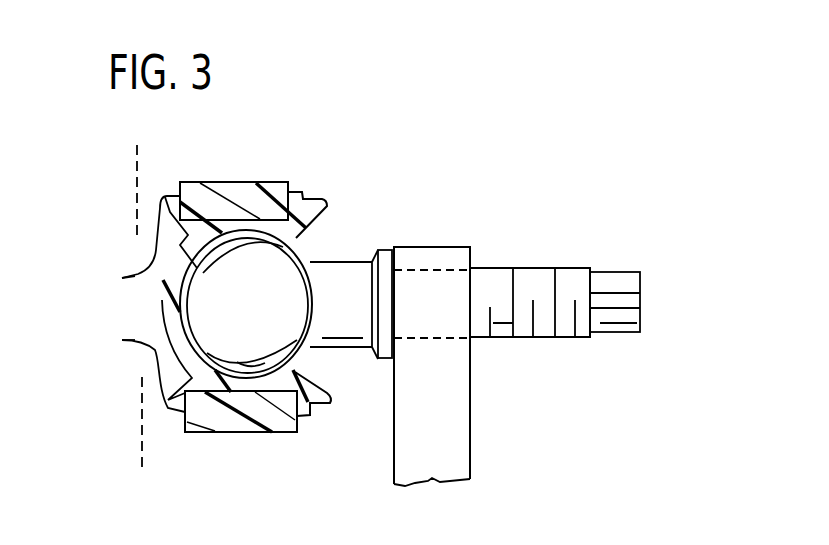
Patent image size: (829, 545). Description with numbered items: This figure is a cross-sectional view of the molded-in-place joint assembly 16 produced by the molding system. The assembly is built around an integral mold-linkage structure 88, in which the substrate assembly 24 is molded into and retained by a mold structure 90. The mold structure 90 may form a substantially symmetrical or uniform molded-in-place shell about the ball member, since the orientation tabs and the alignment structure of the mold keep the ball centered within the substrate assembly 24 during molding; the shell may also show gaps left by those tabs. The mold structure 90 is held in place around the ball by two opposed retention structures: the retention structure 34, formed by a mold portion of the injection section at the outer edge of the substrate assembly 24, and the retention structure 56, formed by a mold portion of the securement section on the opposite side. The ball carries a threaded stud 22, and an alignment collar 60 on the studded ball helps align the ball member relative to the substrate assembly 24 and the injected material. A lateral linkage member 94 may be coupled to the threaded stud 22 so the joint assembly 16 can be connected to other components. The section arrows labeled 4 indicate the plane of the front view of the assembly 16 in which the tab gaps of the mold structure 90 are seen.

The molded-in-place joint assembly 16 is at (602, 222).
The threaded stud 22 is at (495, 268).
The substrate assembly 24 is at (272, 181).
The retention structure 34 is at (122, 278).
The retention structure 56 is at (312, 202).
The alignment collar 60 is at (382, 251).
The integral mold-linkage structure 88 is at (132, 249).
The mold structure 90 is at (153, 307).
The lateral linkage member 94 is at (472, 410).
The section line 4- 4 is at (180, 145).